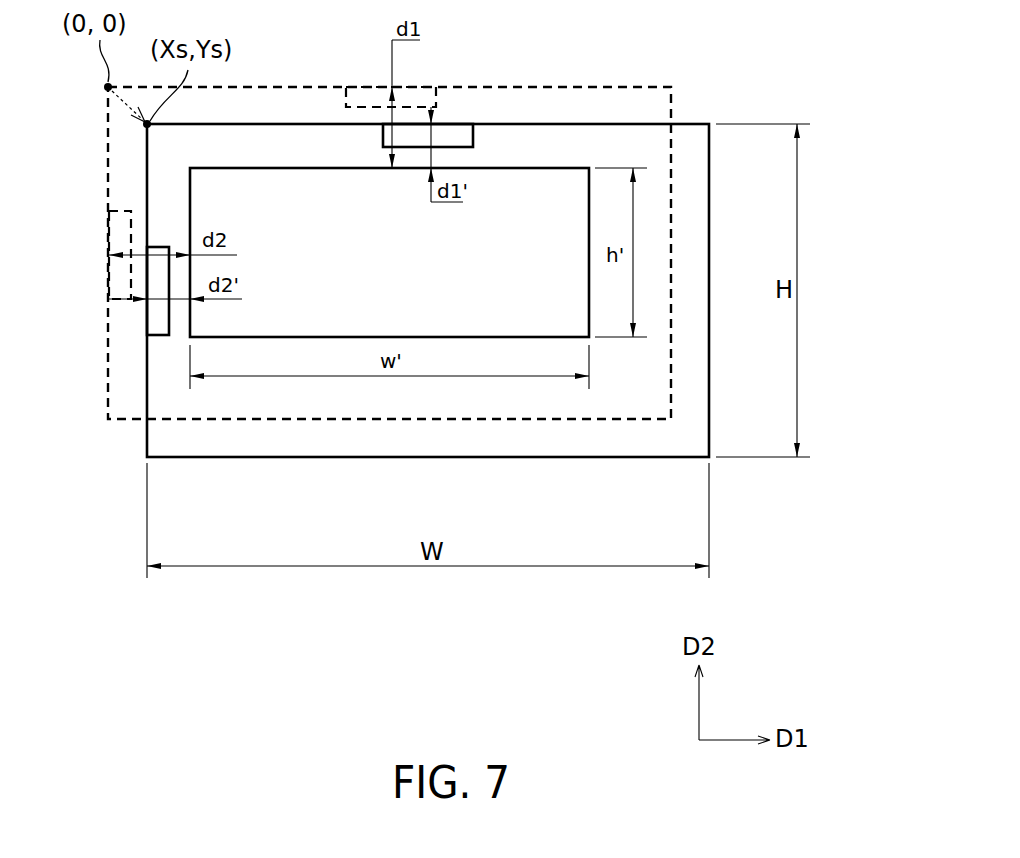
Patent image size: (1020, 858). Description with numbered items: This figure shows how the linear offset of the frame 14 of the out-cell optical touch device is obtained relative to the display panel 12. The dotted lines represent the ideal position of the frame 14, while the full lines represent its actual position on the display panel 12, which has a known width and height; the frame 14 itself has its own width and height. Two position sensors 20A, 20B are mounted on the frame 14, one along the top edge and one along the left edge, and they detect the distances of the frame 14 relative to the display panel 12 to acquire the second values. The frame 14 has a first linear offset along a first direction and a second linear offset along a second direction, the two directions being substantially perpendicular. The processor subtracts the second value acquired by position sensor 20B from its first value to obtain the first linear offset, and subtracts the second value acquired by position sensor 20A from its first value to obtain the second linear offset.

The display panel 12 is at (565, 167).
The frame 14 is at (612, 123).
The position sensor 20A is at (456, 135).
The position sensor 20B is at (157, 316).